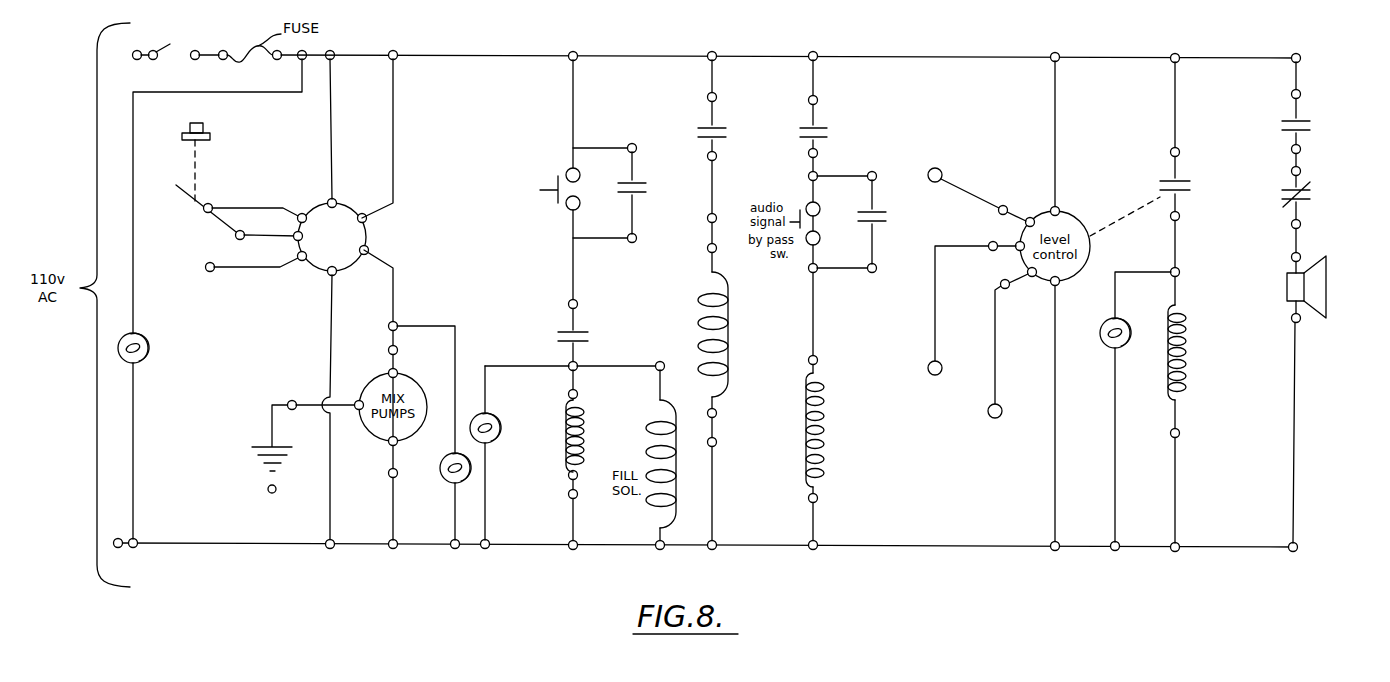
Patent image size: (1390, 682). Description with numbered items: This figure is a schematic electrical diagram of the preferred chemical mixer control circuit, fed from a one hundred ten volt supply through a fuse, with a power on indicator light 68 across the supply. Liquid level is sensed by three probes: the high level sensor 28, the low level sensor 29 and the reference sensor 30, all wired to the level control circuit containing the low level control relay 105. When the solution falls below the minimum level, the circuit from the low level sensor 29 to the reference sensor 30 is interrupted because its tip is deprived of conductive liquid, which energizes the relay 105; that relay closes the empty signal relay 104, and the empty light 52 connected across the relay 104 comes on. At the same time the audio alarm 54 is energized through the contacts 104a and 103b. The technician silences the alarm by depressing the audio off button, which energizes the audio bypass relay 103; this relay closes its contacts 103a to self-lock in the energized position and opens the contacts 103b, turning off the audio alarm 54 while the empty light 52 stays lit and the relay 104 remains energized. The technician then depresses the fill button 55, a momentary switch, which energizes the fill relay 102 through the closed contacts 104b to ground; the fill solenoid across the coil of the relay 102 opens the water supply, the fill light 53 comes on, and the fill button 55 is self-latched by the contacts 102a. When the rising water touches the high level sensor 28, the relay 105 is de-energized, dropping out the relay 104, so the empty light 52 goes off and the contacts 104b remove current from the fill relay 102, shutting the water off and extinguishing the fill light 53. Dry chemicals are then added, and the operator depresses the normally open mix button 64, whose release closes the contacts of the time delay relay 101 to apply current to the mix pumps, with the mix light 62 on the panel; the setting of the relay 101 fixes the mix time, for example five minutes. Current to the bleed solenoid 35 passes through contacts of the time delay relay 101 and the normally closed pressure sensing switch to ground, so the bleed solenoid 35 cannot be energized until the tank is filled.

The high level sensor 28 is at (934, 167).
The low level sensor 29 is at (940, 363).
The reference sensor 30 is at (1003, 406).
The bleed solenoid 35 is at (729, 360).
The empty light 52 is at (1105, 345).
The fill light 53 is at (498, 437).
The audio alarm 54 is at (1329, 298).
The fill button 55 is at (556, 200).
The mix light 62 is at (466, 480).
The mix button 64 is at (195, 141).
The power on indicator light 68 is at (141, 338).
The time delay relay 101 is at (367, 233).
The fill relay 102 is at (564, 424).
The contacts of fill relay 102a is at (641, 181).
The audio bypass relay 103 is at (822, 419).
The contacts of audio bypass relay 103a is at (888, 216).
The contacts of audio bypass relay 103b is at (1310, 195).
The empty signal relay 104 is at (1184, 368).
The contacts of empty signal relay 104a is at (1305, 118).
The contacts of empty signal relay 104b is at (582, 329).
The low level control relay 105 is at (1160, 181).